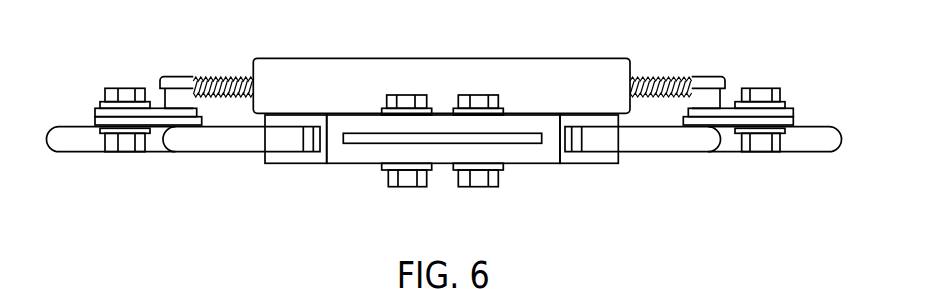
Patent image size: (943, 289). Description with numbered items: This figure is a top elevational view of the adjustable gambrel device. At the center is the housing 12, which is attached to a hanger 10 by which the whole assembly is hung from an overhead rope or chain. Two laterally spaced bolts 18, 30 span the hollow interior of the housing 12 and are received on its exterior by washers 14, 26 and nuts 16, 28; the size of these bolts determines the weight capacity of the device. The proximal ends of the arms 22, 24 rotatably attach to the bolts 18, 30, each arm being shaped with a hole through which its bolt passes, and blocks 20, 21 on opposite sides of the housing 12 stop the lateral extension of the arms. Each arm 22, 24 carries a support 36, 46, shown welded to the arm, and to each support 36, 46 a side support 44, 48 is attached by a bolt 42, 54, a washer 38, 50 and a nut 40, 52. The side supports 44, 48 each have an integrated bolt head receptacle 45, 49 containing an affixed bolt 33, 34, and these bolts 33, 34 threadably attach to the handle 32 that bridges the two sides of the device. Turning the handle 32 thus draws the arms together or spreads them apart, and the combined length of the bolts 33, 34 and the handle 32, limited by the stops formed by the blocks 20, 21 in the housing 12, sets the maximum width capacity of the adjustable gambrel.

The hanger 10 is at (515, 140).
The housing 12 is at (542, 153).
The washer 14 is at (500, 170).
The nut 16 is at (478, 177).
The bolt 18 is at (478, 97).
The block 20 is at (285, 147).
The block 21 is at (600, 145).
The arm 22 is at (62, 140).
The arm 24 is at (825, 138).
The washer 26 is at (385, 167).
The nut 28 is at (407, 178).
The bolt 30 is at (403, 97).
The handle 32 is at (595, 68).
The bolt 33 is at (223, 78).
The bolt 34 is at (653, 78).
The support 36 is at (787, 122).
The washer 38 is at (780, 133).
The nut 40 is at (760, 143).
The bolt 42 is at (758, 97).
The side support 44 is at (787, 113).
The bolt head receptacle 45 is at (703, 82).
The support 46 is at (100, 122).
The side support 48 is at (100, 112).
The bolt head receptacle 49 is at (177, 82).
The washer 50 is at (102, 133).
The nut 52 is at (127, 143).
The bolt 54 is at (125, 97).